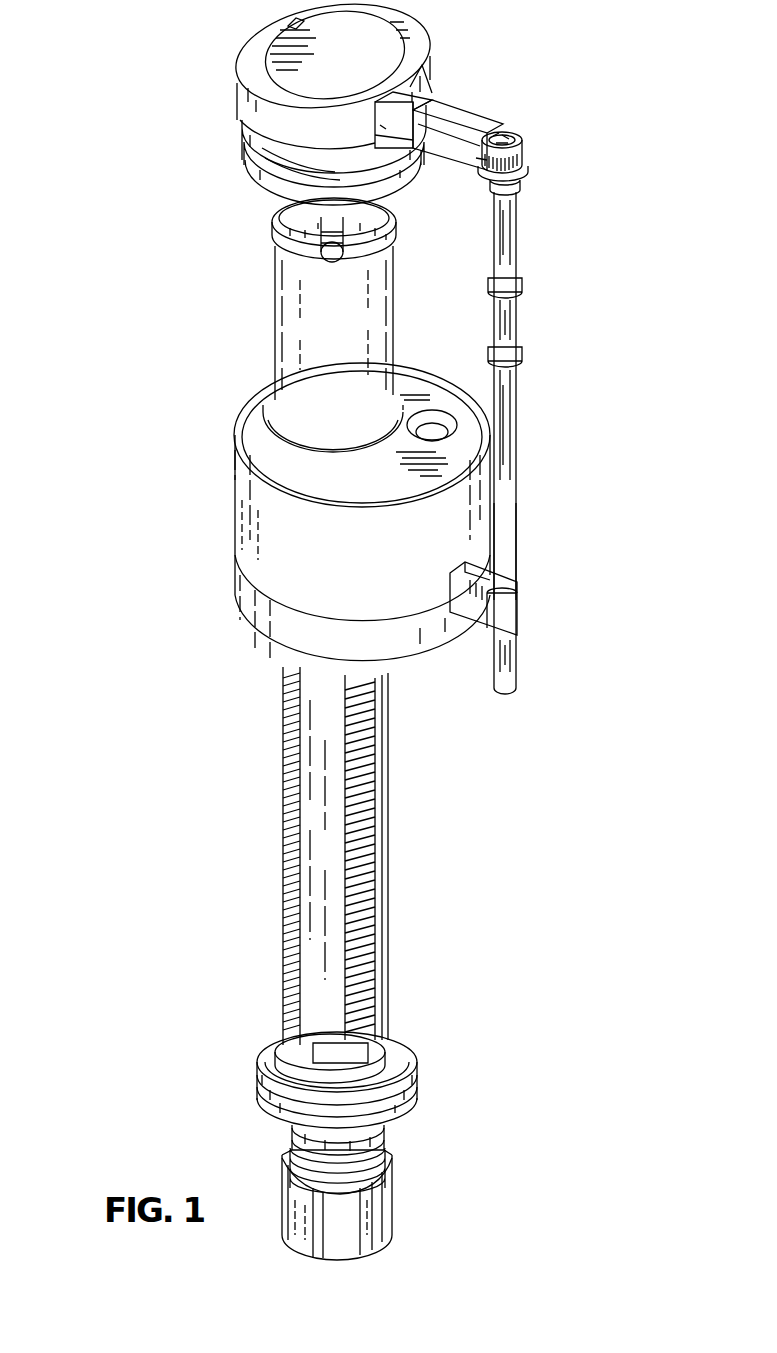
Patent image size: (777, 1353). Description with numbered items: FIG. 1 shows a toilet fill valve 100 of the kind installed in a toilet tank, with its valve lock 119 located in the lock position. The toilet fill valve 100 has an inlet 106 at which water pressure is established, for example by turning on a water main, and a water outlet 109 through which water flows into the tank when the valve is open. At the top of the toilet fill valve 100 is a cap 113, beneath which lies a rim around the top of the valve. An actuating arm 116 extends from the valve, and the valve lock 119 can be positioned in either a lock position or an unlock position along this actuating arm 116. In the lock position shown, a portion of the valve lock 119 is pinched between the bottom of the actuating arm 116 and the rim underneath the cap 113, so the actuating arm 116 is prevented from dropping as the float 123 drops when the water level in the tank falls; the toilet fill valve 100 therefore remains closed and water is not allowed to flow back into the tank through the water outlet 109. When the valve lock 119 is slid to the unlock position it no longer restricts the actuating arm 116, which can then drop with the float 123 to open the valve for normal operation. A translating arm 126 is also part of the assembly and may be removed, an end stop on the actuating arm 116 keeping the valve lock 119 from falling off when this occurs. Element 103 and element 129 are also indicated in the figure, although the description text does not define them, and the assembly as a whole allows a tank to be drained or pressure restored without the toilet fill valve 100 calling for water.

The toilet fill valve 100 is at (135, 110).
The float body 103 is at (172, 558).
The inlet 106 is at (392, 1262).
The water outlet 109 is at (353, 1053).
The cap 113 is at (398, 30).
The actuating arm 116 is at (448, 122).
The valve lock 119 is at (414, 100).
The float 123 is at (402, 622).
The translating arm 126 is at (505, 465).
The refill nipple 129 is at (322, 244).